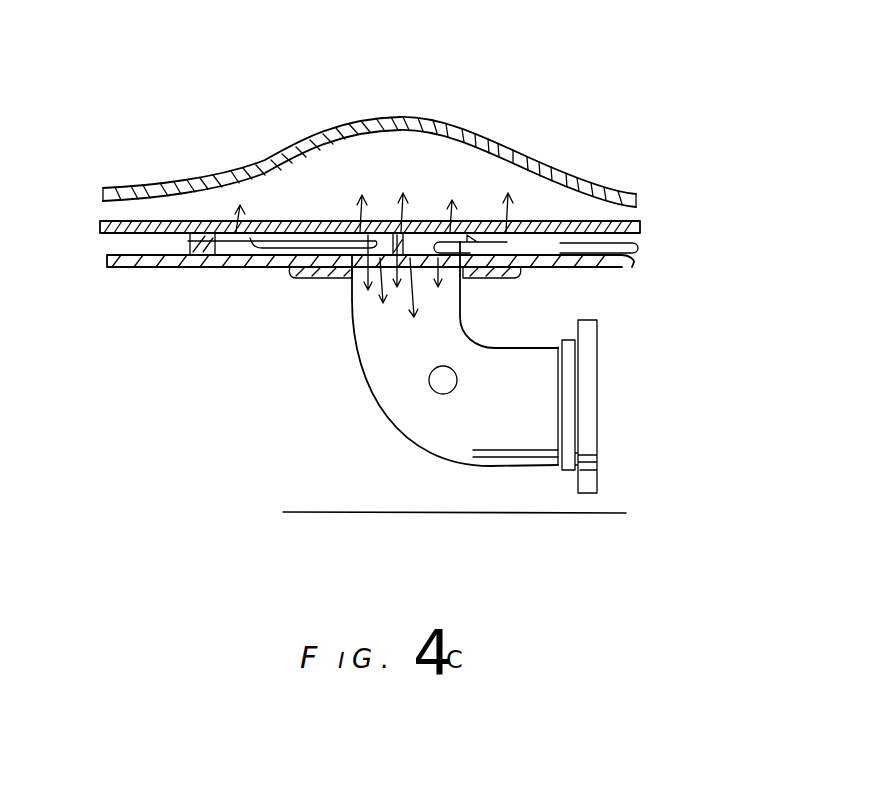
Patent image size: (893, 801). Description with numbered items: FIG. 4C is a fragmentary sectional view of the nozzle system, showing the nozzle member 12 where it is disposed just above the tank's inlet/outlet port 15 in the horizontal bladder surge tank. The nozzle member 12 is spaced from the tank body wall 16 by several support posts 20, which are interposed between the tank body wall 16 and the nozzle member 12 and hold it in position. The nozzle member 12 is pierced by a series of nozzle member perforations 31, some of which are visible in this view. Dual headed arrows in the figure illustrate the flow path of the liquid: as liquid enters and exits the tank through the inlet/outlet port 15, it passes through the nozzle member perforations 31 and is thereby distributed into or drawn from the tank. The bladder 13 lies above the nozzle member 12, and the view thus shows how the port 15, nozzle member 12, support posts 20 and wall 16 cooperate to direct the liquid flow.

The nozzle member 12 is at (593, 221).
The flexible membrane 13 is at (514, 134).
The inlet/outlet port 15 is at (380, 370).
The tank body wall 16 is at (125, 268).
The support posts 20 is at (187, 267).
The nozzle member perforations 31 is at (162, 221).